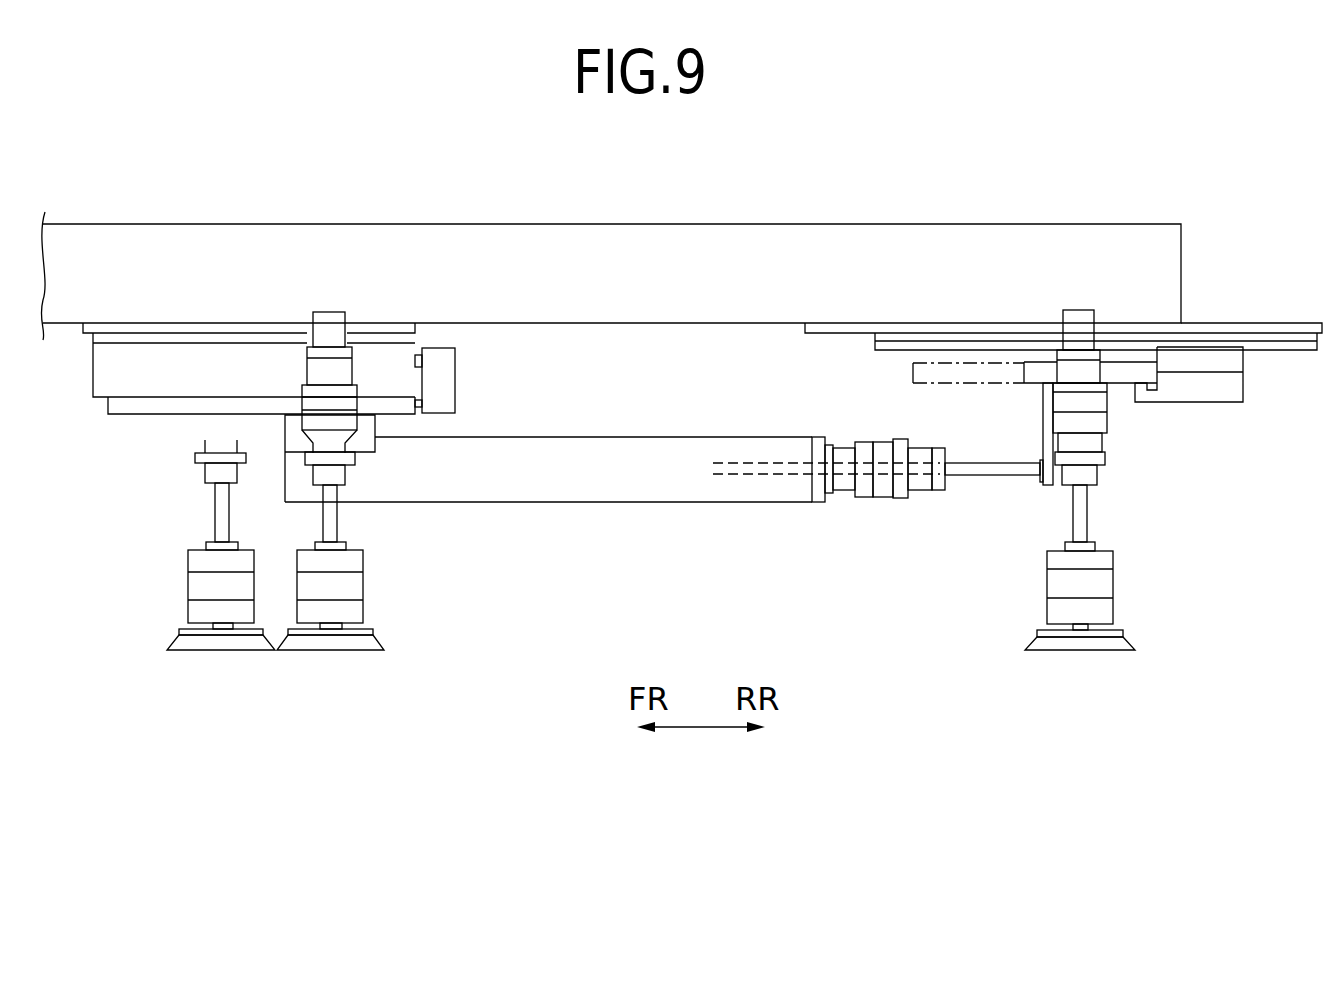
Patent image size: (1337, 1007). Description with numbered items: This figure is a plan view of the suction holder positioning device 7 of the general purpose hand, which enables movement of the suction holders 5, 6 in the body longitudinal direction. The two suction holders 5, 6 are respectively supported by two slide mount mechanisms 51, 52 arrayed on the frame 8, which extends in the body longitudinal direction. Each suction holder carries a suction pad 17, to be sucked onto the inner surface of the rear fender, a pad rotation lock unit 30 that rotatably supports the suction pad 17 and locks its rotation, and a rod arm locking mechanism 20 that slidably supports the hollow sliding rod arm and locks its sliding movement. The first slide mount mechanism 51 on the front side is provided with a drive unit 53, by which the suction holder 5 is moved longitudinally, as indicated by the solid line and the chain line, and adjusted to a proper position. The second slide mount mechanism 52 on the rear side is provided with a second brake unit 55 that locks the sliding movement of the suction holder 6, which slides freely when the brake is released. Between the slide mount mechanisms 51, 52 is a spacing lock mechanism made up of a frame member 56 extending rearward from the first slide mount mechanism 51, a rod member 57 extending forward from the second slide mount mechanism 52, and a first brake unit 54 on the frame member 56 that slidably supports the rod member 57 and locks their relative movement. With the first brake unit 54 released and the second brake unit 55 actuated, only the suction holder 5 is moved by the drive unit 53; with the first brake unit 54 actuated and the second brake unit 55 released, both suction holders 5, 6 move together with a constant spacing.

The suction holder 5 is at (342, 297).
The suction holder 6 is at (1102, 297).
The suction holder positioning device 7 is at (664, 451).
The frame 8 is at (822, 237).
The suction pad 17 is at (384, 646).
The rod arm locking mechanism 20 is at (367, 388).
The pad rotation lock unit 30 is at (380, 588).
The first slide mount mechanism 51 is at (253, 314).
The second slide mount mechanism 52 is at (1243, 311).
The drive unit 53 is at (447, 348).
The first brake unit 54 is at (883, 488).
The second brake unit 55 is at (1238, 383).
The frame member 56 is at (735, 487).
The rod member 57 is at (985, 470).